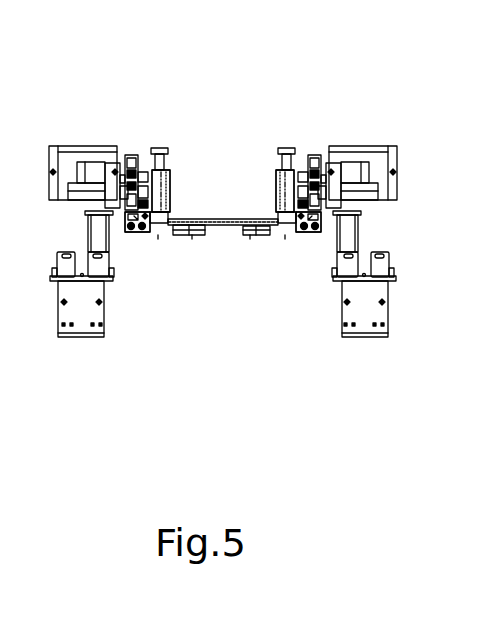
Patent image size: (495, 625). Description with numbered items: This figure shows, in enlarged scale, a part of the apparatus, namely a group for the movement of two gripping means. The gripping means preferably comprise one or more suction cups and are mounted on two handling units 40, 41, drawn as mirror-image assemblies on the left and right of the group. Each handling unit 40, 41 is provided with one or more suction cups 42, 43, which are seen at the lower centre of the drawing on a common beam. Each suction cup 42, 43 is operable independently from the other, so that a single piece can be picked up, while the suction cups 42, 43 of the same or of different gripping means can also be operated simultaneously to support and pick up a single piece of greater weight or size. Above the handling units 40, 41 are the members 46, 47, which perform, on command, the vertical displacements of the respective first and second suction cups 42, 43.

The handling unit 40 is at (148, 303).
The handling unit 41 is at (288, 303).
The first suction cup 42 is at (192, 267).
The second suction cup 43 is at (252, 267).
The member for vertical displacement 46 is at (176, 119).
The member for vertical displacement 47 is at (270, 119).